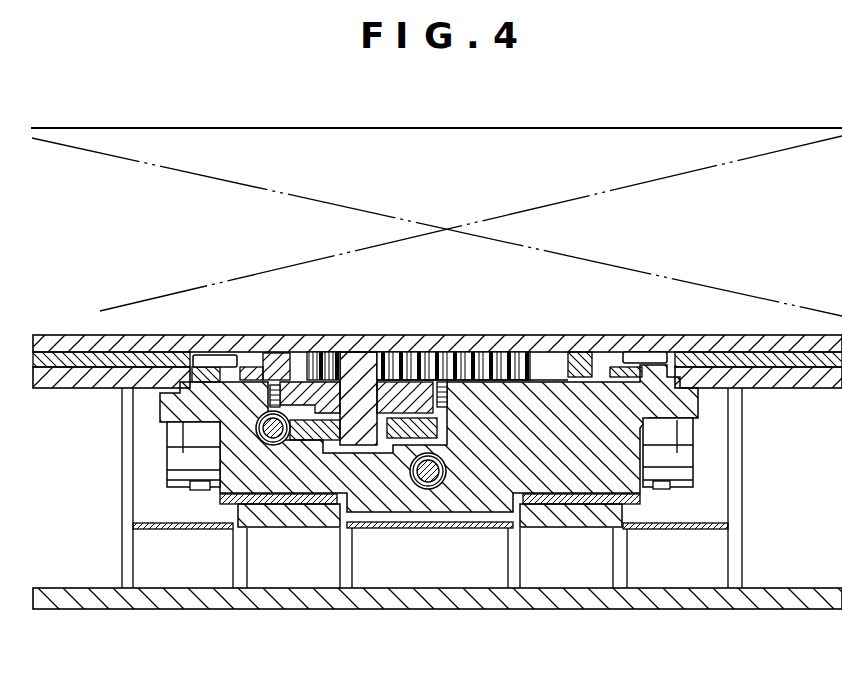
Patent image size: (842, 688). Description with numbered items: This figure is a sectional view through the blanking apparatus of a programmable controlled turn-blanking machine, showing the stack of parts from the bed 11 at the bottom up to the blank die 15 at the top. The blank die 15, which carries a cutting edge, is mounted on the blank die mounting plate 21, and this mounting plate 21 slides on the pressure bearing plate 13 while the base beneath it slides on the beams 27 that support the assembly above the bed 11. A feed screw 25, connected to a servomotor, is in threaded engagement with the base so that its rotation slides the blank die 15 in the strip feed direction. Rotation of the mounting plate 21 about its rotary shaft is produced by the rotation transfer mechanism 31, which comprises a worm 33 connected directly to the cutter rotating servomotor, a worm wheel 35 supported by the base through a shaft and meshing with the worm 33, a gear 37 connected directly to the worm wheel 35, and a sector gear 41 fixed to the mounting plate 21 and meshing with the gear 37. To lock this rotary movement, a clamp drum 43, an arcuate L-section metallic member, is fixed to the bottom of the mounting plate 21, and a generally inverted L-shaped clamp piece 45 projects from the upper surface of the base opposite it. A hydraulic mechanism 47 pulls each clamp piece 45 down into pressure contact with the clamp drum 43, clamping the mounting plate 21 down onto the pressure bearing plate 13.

The bed 11 is at (800, 590).
The pressure bearing plate 13 is at (70, 382).
The blank die 15 is at (566, 108).
The blank die mounting plate 21 is at (712, 334).
The feed screw 25 is at (427, 490).
The beams 27 is at (311, 513).
The rotation transfer mechanism 31 is at (370, 351).
The worm 33 is at (268, 446).
The worm wheel 35 is at (298, 428).
The gear 37 is at (347, 362).
The sector gear 41 is at (538, 372).
The clamp drum 43 is at (262, 370).
The clamp piece 45 is at (207, 355).
The hydraulic mechanism 47 is at (167, 468).